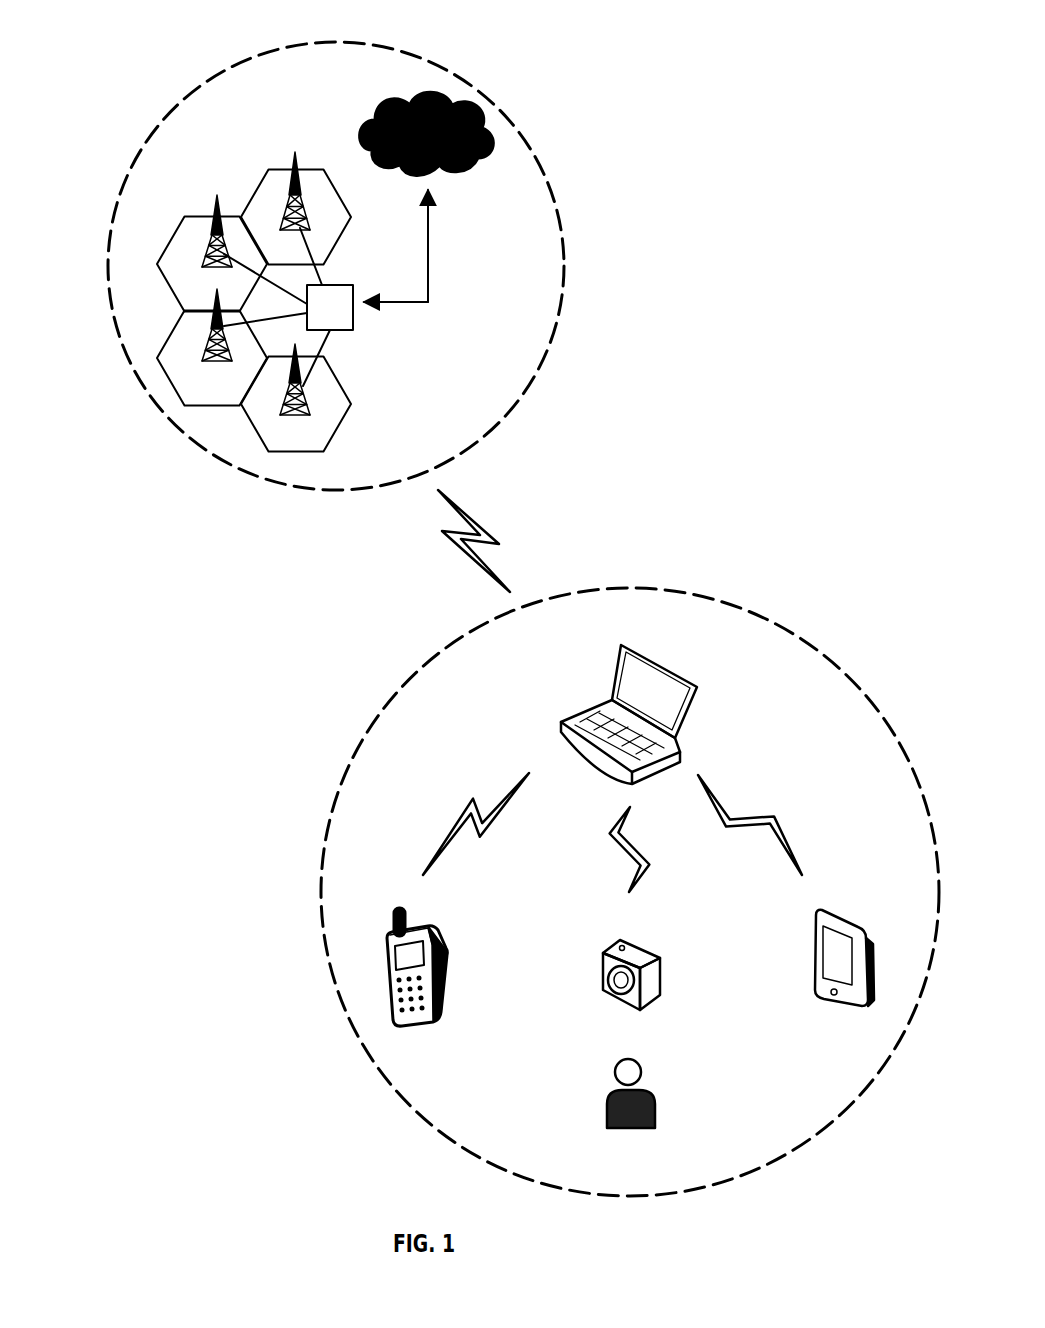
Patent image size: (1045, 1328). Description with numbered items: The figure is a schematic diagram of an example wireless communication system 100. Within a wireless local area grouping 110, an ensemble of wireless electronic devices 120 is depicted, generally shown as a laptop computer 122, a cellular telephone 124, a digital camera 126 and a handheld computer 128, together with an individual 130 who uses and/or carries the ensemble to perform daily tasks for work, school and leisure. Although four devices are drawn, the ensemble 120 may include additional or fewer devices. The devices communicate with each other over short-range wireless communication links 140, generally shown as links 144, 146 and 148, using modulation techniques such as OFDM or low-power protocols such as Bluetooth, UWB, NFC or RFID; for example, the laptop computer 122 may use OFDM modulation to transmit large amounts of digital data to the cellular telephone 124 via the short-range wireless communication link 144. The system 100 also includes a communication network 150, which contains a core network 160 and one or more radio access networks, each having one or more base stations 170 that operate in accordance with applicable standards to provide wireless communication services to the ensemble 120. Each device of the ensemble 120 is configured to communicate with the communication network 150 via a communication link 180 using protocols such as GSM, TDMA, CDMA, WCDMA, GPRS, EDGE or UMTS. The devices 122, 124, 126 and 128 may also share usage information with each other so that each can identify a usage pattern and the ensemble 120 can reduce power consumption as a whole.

The wireless communication system 100 is at (113, 47).
The wireless local area network 110 is at (320, 890).
The ensemble of wireless electronic devices 120 is at (526, 706).
The laptop computer 122 is at (675, 673).
The cellular telephone 124 is at (425, 930).
The digital camera 126 is at (658, 960).
The handheld computer 128 is at (845, 907).
The individual 130 is at (658, 1092).
The short-range wireless communication links 140 is at (457, 795).
The short-range wireless communication link 144 is at (488, 848).
The short-range wireless communication link 146 is at (620, 830).
The short-range wireless communication link 148 is at (752, 818).
The communication network 150 is at (563, 270).
The core network 160 is at (488, 138).
The base stations 170 is at (294, 169).
The communication link 180 is at (493, 521).